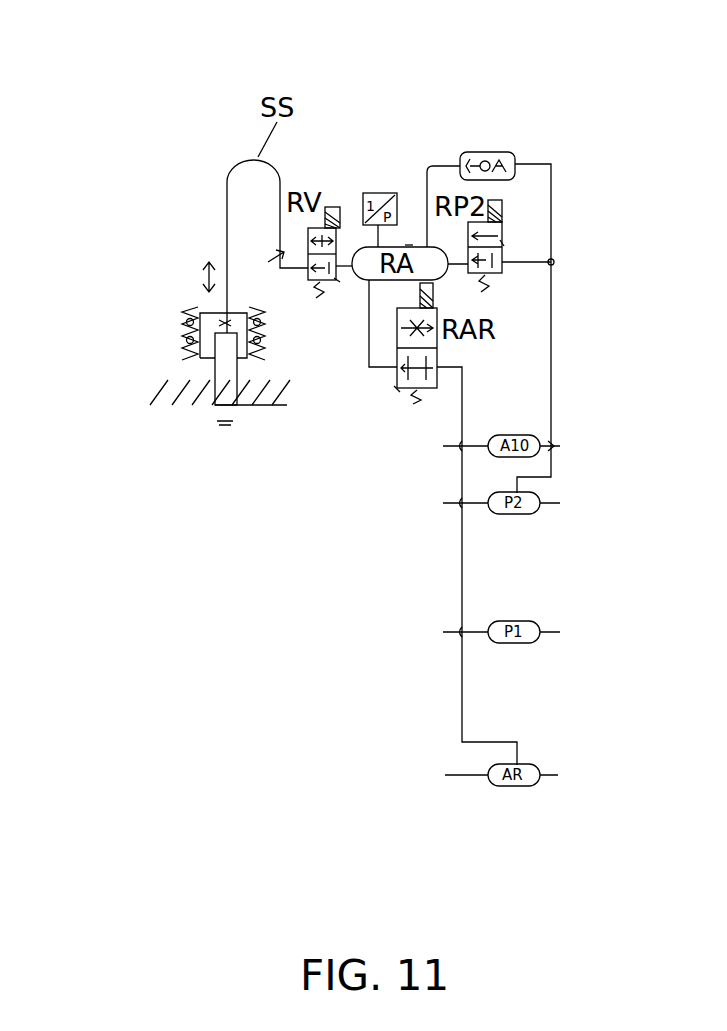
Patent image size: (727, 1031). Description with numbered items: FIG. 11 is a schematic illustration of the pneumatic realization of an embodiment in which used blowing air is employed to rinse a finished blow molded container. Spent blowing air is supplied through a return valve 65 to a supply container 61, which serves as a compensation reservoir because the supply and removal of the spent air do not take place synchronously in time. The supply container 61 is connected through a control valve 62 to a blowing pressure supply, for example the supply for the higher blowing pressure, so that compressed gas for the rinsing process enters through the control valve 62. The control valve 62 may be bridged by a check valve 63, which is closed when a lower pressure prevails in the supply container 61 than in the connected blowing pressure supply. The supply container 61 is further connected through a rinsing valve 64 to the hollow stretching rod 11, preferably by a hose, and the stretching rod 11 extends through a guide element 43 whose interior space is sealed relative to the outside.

The stretching rod 11 is at (225, 427).
The guide element 43 is at (185, 340).
The supply container 61 is at (409, 247).
The control valve 62 is at (502, 243).
The check valve 63 is at (488, 152).
The rinsing valve 64 is at (337, 280).
The return valve 65 is at (397, 390).